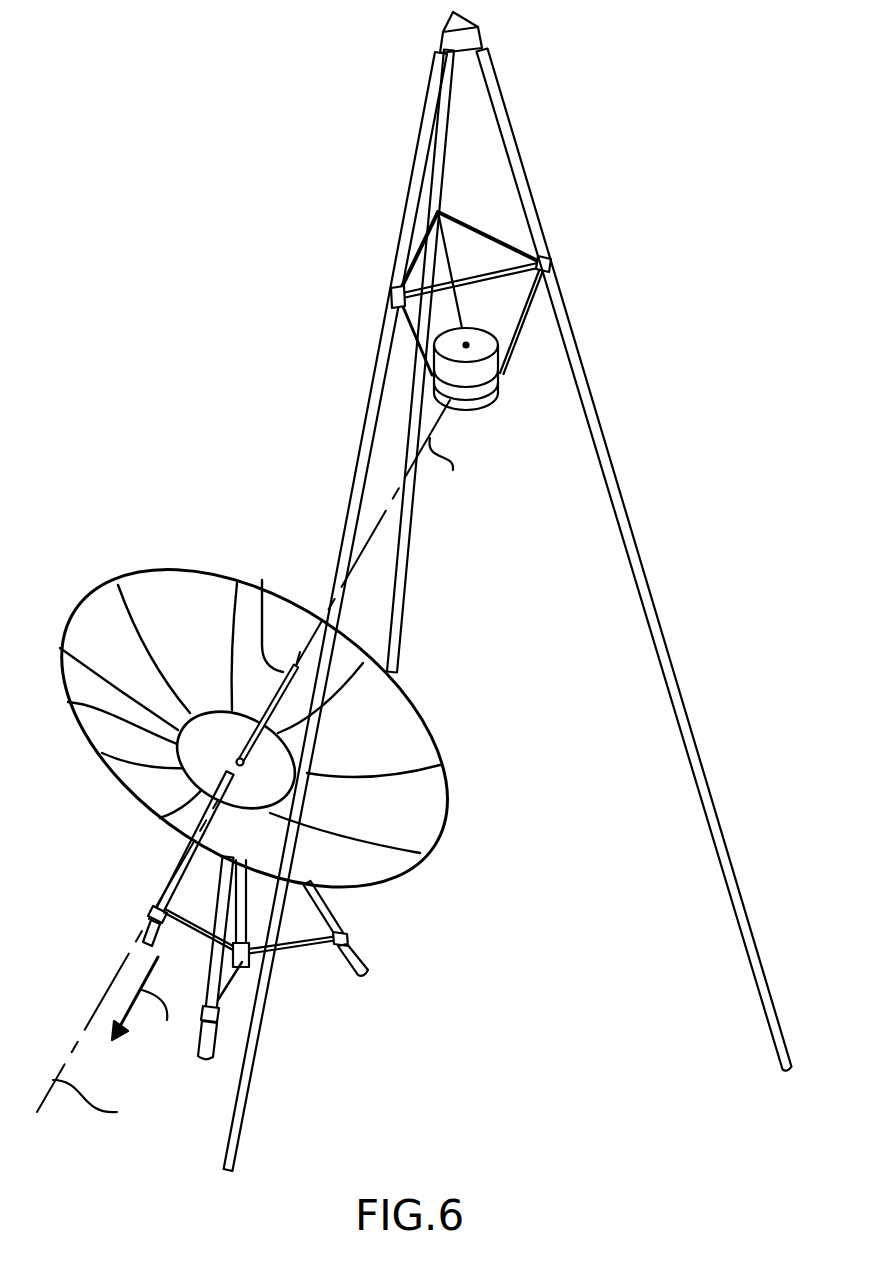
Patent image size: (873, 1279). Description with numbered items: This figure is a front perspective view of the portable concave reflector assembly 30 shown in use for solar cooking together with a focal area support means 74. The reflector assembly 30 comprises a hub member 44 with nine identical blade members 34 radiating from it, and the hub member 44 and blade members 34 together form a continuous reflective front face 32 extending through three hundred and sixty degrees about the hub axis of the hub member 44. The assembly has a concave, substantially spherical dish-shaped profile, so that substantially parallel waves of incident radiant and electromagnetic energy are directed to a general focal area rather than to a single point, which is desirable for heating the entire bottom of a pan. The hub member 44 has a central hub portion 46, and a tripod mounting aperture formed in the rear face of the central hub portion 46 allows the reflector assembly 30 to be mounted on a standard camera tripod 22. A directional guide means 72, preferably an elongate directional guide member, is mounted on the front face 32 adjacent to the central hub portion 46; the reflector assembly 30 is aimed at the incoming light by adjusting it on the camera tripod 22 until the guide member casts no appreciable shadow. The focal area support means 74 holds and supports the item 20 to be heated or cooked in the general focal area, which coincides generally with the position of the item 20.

The item to be heated or cooked 20 is at (483, 395).
The standard camera tripod 22 is at (367, 960).
The portable concave reflector assembly 30 is at (268, 509).
The front face 32 is at (203, 651).
The blade members 34 is at (95, 632).
The hub member 44 is at (163, 817).
The central hub portion 46 is at (68, 703).
The directional guide means 72 is at (269, 655).
The focal area support means 74 is at (682, 699).